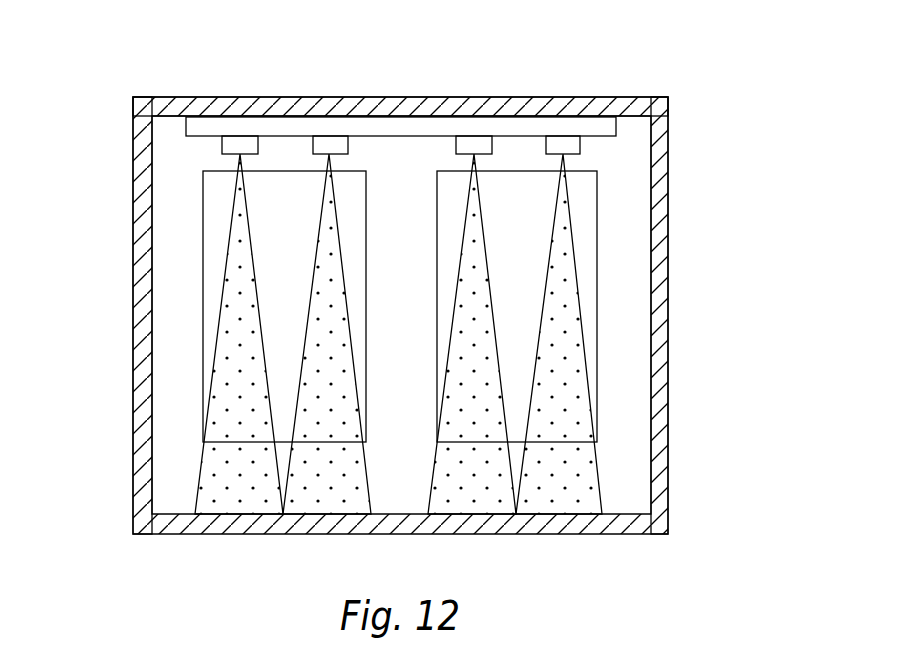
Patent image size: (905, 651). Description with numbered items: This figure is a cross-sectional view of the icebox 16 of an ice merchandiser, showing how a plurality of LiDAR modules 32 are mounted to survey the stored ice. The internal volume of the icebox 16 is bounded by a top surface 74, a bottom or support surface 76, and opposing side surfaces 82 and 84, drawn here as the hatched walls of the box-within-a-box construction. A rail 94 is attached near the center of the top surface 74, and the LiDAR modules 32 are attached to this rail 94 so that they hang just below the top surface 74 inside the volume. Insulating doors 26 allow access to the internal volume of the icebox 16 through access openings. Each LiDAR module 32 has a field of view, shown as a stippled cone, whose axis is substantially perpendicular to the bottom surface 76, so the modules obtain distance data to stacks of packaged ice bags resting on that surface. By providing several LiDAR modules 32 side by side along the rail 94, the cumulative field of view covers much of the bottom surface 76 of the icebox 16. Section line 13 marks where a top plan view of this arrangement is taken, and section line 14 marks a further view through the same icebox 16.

The line 13- 13 is at (79, 10).
The section line 14- 14 is at (837, 100).
The icebox 16 is at (389, 283).
The insulating doors 26 is at (266, 241).
The LiDAR modules 32 is at (240, 154).
The top surface 74 is at (152, 116).
The bottom surface 76 is at (628, 496).
The side surface 82 is at (160, 222).
The side surface 84 is at (654, 258).
The rail 94 is at (405, 130).